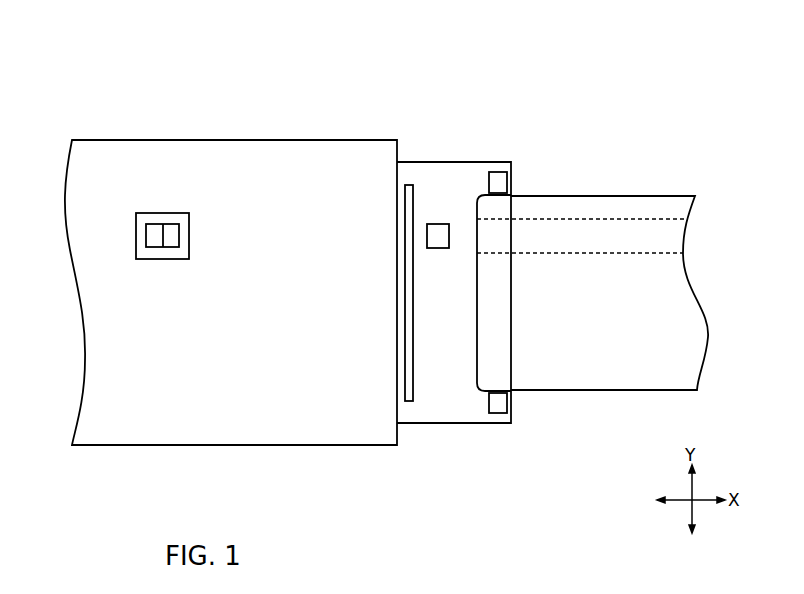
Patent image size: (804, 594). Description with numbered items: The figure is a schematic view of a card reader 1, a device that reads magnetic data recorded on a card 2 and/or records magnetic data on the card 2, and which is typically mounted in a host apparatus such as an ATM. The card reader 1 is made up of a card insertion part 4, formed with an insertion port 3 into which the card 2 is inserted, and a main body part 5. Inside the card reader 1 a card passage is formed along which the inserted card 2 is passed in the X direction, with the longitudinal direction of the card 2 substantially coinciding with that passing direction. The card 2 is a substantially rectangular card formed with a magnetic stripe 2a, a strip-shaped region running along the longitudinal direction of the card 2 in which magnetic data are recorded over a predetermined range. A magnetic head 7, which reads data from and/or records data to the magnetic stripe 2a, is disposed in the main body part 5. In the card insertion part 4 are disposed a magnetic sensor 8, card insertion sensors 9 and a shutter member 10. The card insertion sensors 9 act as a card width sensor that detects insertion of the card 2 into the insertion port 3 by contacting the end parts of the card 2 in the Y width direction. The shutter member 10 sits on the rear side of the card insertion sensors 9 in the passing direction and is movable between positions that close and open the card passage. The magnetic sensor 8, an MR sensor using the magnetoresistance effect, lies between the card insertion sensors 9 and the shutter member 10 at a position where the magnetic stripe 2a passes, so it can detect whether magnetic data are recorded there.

The card reader 1 is at (540, 97).
The card 2 is at (611, 391).
The magnetic stripe 2a is at (592, 255).
The insertion port 3 is at (515, 190).
The card insertion part 4 is at (435, 162).
The main body part 5 is at (278, 139).
The magnetic head 7 is at (160, 260).
The magnetic sensor 8 is at (438, 249).
The card insertion sensors 9 is at (496, 172).
The shutter member 10 is at (413, 380).